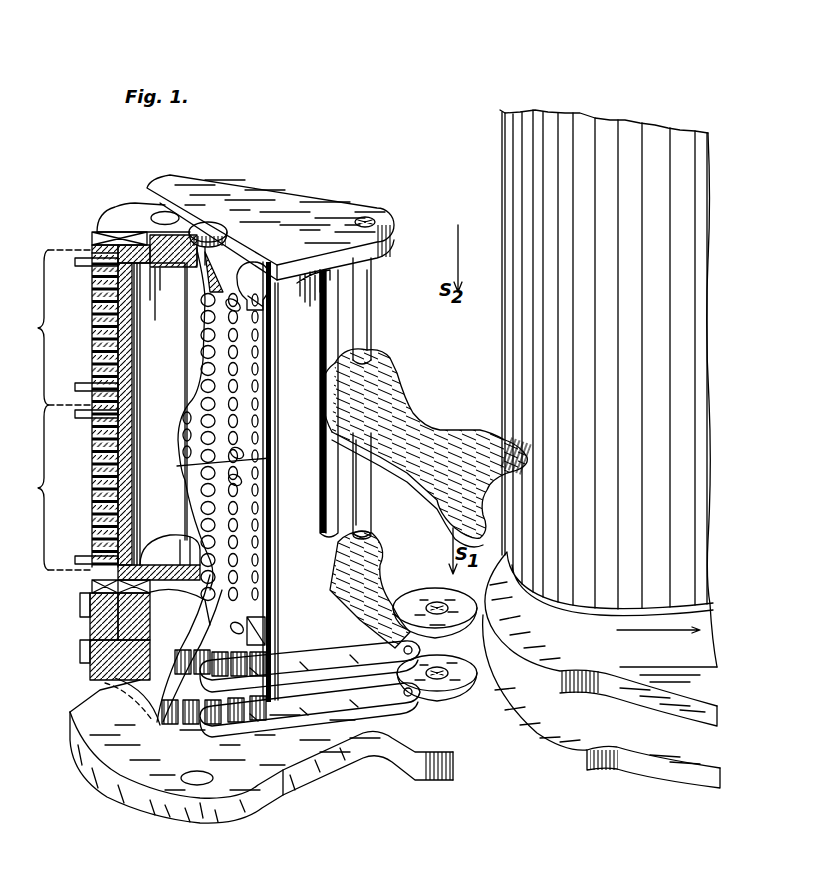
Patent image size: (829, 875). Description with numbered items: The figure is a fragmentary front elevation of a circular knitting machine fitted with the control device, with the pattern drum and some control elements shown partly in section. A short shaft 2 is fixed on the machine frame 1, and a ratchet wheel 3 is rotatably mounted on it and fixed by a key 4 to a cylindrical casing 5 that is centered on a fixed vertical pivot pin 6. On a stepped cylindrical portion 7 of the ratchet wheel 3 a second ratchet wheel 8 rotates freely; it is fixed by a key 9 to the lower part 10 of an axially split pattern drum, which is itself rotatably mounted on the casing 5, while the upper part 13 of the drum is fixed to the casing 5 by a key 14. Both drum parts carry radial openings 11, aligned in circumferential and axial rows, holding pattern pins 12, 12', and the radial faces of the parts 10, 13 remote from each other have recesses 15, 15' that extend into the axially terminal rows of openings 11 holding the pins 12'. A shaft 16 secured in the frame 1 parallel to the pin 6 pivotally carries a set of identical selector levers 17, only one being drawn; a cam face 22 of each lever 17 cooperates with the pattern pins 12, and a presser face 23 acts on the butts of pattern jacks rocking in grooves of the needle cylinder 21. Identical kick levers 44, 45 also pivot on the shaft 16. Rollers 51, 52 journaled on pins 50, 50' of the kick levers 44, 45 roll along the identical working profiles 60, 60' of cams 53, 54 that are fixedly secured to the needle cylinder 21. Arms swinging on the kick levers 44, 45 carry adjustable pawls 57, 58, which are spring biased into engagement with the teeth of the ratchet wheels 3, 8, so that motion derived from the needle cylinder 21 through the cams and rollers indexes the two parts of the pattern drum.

The machine frame 1 is at (157, 800).
The short shaft 2 is at (93, 681).
The ratchet wheel 3 is at (80, 653).
The key 4 is at (159, 557).
The cylindrical casing 5 is at (135, 421).
The fixed vertical pivot pin 6 is at (200, 319).
The stepped cylindrical portion 7 is at (95, 681).
The second ratchet wheel 8 is at (80, 607).
The key 9 is at (92, 584).
The lower part of the pattern drum 10 is at (54, 487).
The radial openings 11 is at (98, 357).
The pattern pins 12 is at (180, 428).
The pattern pins 12' is at (180, 447).
The upper part of the pattern drum 13 is at (54, 327).
The key 14 is at (95, 238).
The recess 15 is at (270, 236).
The recess 15' is at (289, 482).
The shaft 16 is at (372, 280).
The selector lever 17 is at (408, 423).
The needle cylinder 21 is at (580, 126).
The cam face 22 is at (337, 403).
The presser face 23 is at (492, 439).
The kick lever 44 is at (375, 543).
The kick lever 45 is at (374, 632).
The pin 50 is at (455, 658).
The pin 50' is at (458, 589).
The roller 51 is at (431, 597).
The roller 52 is at (455, 693).
The cam 53 is at (535, 677).
The cam 54 is at (538, 742).
The adjustable pawl 57 is at (350, 669).
The adjustable pawl 58 is at (377, 711).
The working profile 60 is at (623, 778).
The working profile 60' is at (580, 738).